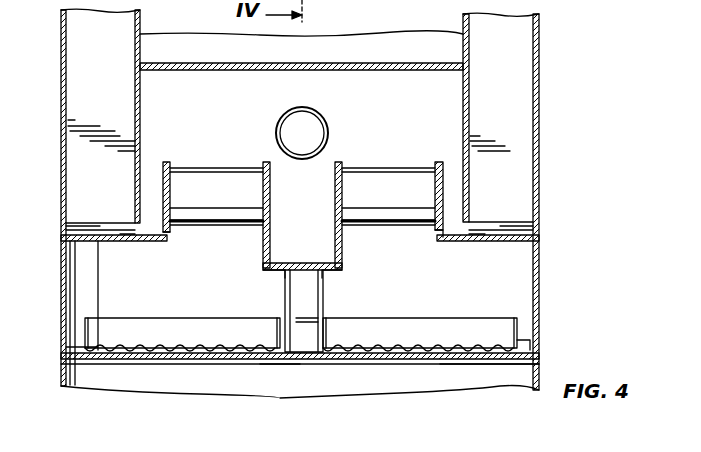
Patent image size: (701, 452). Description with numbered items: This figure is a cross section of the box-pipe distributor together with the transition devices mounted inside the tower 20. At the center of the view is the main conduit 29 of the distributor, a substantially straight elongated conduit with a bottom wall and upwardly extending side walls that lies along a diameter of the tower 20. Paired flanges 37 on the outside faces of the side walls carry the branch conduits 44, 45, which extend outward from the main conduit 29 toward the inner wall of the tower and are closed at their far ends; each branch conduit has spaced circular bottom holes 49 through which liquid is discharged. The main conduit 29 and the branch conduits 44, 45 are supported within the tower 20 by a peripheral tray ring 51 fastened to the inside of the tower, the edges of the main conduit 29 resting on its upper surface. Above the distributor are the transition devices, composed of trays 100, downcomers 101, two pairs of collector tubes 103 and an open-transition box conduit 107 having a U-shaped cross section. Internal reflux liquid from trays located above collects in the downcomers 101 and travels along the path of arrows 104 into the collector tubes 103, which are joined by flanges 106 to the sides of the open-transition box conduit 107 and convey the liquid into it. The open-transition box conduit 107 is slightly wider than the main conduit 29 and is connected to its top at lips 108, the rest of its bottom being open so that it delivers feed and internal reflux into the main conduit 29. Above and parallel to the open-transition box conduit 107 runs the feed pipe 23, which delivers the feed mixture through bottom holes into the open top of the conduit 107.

The tower 20 is at (540, 112).
The feed pipe 23 is at (325, 118).
The main conduit 29 is at (325, 293).
The paired flanges 37 is at (272, 364).
The branch conduit 44 is at (200, 300).
The branch conduit 45 is at (445, 318).
The bottom holes 49 is at (133, 352).
The tray ring 51 is at (487, 364).
The trays 100 is at (370, 64).
The downcomers 101 is at (142, 24).
The collector tubes 103 is at (303, 199).
The arrows 104 is at (100, 232).
The flanges 106 is at (265, 162).
The open-transition box conduit 107 is at (302, 229).
The lips 108 is at (272, 272).